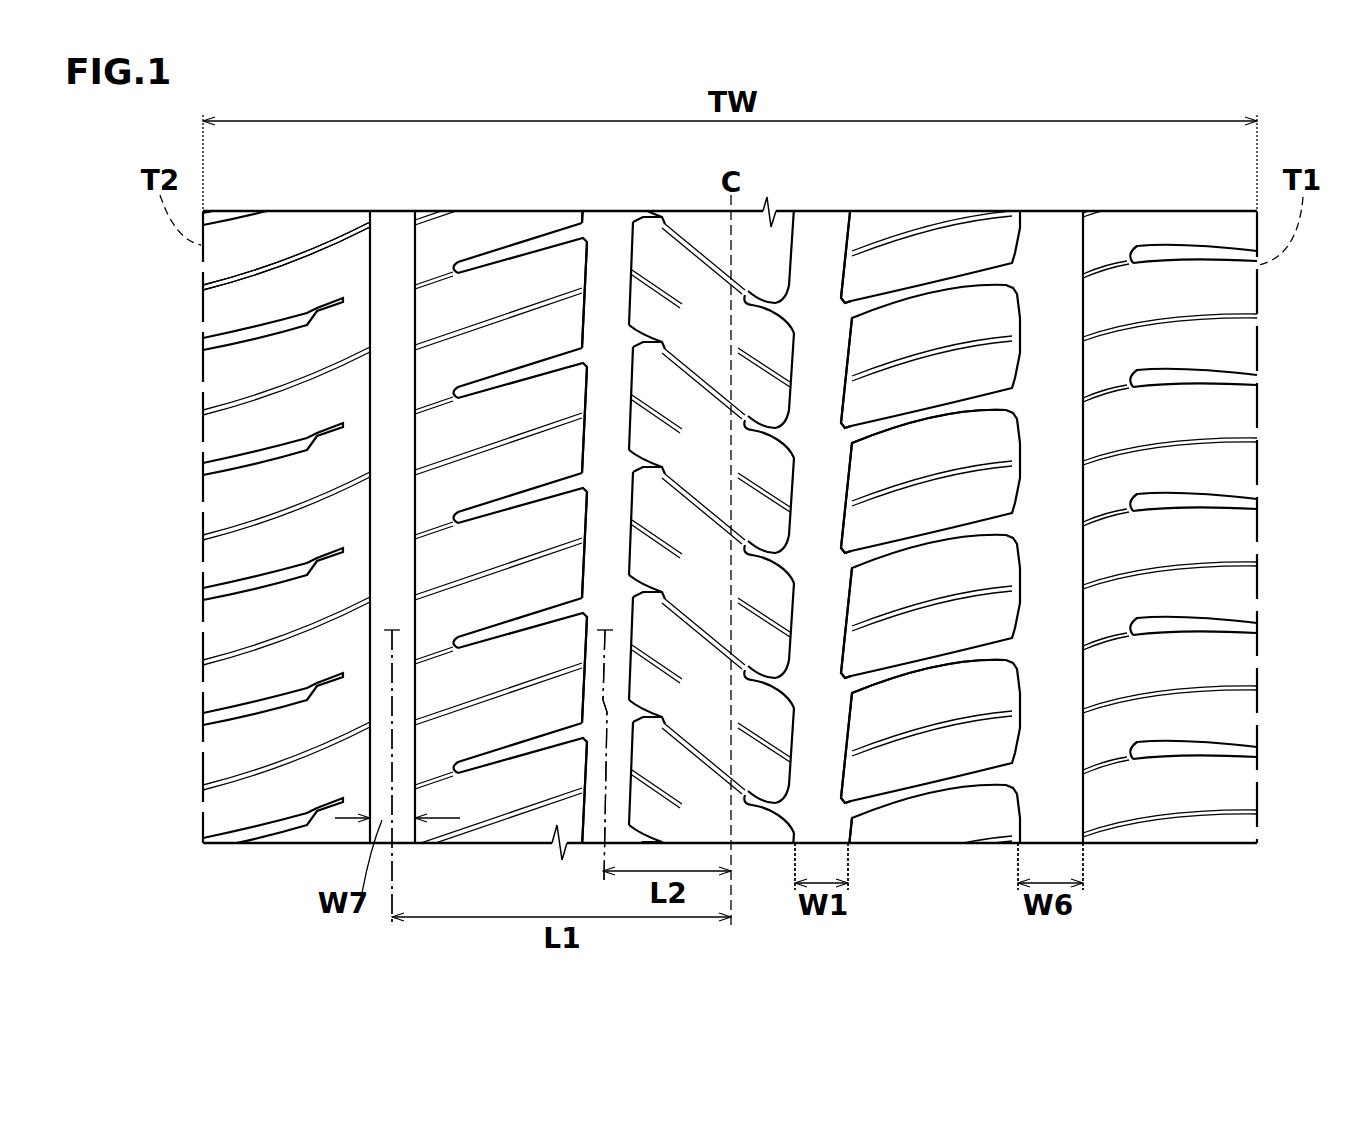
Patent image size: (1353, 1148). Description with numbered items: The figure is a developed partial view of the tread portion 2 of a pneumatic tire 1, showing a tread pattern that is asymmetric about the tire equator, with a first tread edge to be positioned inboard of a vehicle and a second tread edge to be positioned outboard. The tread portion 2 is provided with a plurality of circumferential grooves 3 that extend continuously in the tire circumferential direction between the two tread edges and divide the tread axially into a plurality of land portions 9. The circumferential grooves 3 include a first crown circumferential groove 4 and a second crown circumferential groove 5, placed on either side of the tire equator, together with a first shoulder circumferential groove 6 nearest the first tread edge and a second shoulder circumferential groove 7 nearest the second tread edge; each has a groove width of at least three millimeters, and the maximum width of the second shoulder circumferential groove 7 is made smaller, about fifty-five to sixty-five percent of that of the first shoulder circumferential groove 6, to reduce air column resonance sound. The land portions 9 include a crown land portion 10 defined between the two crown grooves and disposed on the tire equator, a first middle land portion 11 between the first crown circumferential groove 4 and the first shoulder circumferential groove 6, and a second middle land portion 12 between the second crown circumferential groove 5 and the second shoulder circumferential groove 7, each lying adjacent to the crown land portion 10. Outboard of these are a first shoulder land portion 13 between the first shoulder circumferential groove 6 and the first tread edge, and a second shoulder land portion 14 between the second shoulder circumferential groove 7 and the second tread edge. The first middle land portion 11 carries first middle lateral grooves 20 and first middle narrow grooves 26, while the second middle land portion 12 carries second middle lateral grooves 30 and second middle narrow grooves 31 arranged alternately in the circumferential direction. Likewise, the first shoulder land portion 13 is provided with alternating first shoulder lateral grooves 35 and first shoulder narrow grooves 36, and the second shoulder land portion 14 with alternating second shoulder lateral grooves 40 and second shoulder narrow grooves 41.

The pneumatic tire 1 is at (975, 200).
The tread portion 2 is at (549, 208).
The circumferential grooves 3 is at (385, 288).
The first crown circumferential groove 4 is at (815, 255).
The second crown circumferential groove 5 is at (605, 255).
The first shoulder circumferential groove 6 is at (1050, 258).
The second shoulder circumferential groove 7 is at (389, 242).
The land portions 9 is at (248, 498).
The crown land portion 10 is at (690, 275).
The first middle land portion 11 is at (1091, 537).
The second middle land portion 12 is at (356, 474).
The first shoulder land portion 13 is at (1212, 479).
The second shoulder land portion 14 is at (300, 242).
The first middle lateral grooves 20 is at (923, 413).
The first middle narrow grooves 26 is at (918, 737).
The second middle lateral grooves 30 is at (505, 375).
The second middle narrow grooves 31 is at (470, 450).
The first shoulder lateral grooves 35 is at (1202, 494).
The first shoulder narrow grooves 36 is at (1188, 436).
The second shoulder lateral grooves 40 is at (255, 583).
The second shoulder narrow grooves 41 is at (262, 517).